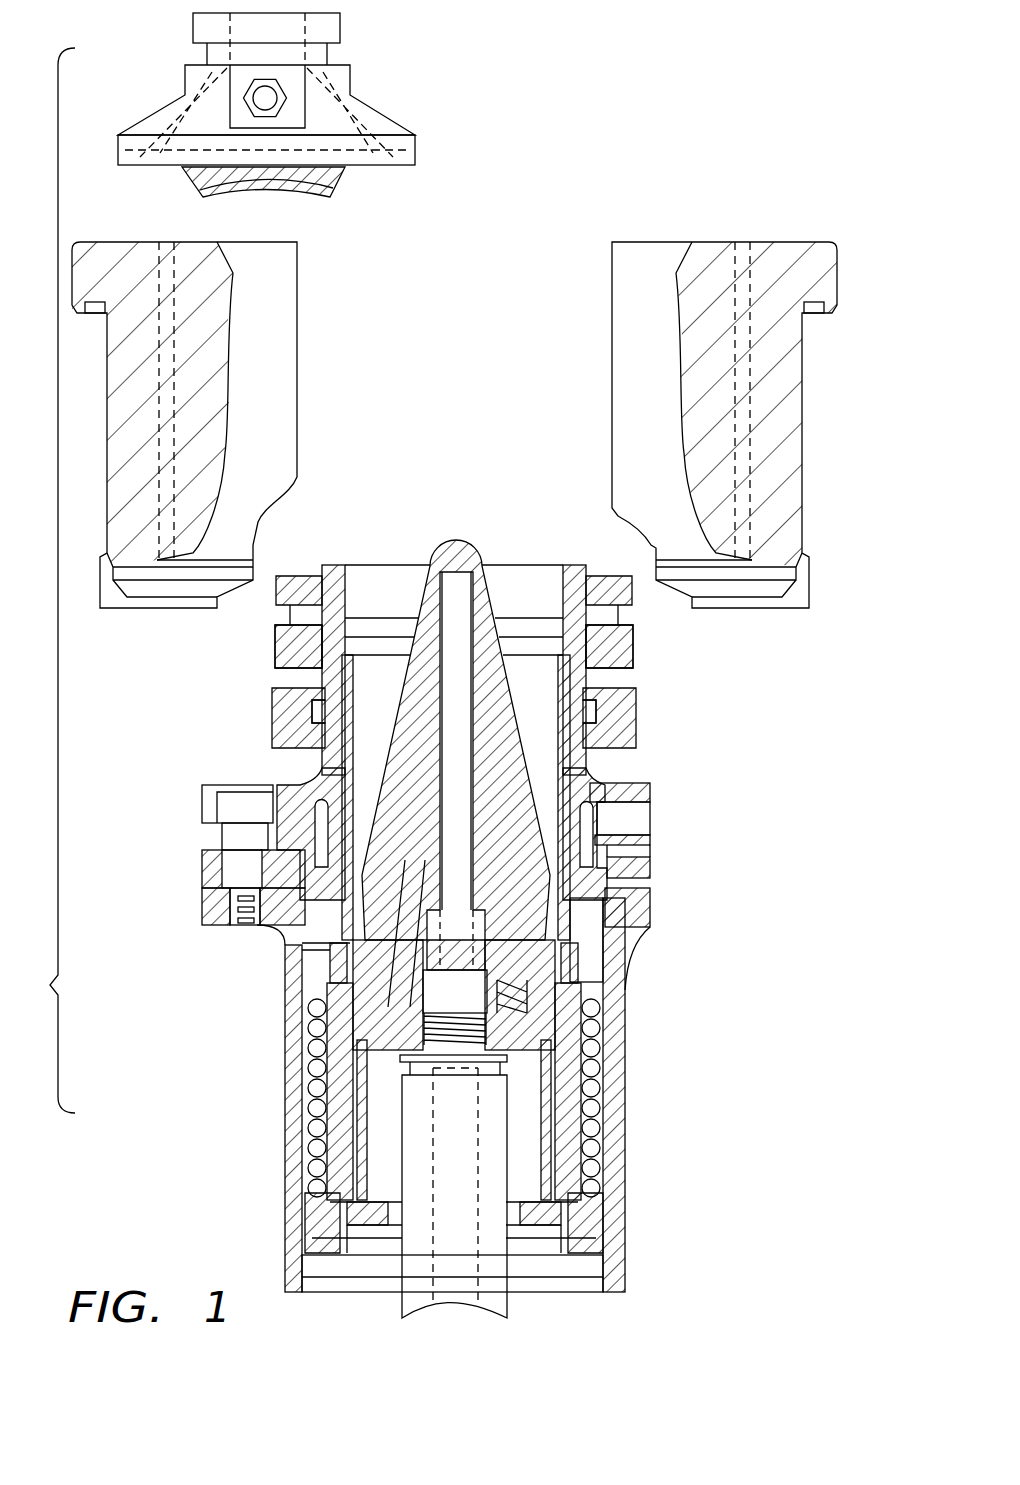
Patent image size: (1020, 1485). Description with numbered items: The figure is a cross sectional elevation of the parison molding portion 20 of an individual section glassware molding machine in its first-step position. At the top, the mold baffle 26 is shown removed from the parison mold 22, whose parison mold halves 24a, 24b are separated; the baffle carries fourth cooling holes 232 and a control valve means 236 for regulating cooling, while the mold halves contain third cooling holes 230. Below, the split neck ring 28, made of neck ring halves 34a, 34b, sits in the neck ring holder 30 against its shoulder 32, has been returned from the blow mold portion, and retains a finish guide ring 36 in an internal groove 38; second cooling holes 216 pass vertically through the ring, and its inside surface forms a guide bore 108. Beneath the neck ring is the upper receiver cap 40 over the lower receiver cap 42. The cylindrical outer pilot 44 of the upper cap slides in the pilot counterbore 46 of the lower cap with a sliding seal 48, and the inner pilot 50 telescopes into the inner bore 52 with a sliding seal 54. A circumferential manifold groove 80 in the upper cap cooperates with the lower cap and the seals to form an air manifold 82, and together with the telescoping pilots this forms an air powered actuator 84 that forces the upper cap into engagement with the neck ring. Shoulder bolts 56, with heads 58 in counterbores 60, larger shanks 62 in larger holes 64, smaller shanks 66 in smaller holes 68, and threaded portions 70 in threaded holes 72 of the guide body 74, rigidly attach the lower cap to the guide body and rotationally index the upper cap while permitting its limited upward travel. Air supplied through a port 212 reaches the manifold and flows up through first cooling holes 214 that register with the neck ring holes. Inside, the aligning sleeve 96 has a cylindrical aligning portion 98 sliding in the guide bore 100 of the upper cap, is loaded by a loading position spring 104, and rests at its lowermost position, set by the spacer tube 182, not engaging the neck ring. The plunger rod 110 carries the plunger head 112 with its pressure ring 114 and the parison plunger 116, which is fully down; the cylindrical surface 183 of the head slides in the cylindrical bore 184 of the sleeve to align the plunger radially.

The parison molding portion 20 is at (579, 158).
The parison mold 22 is at (713, 188).
The parison mold half 24a is at (298, 345).
The parison mold half 24b is at (612, 345).
The mold baffle 26 is at (420, 155).
The split neck ring 28 is at (290, 640).
The neck ring holder 30 is at (275, 705).
The shoulder 32 is at (312, 730).
The neck ring half 34a is at (275, 664).
The neck ring half 34b is at (638, 627).
The finish guide ring 36 is at (632, 636).
The internal groove 38 is at (600, 663).
The upper receiver cap 40 is at (203, 810).
The lower receiver cap 42 is at (225, 860).
The outer pilot 44 is at (618, 885).
The pilot counterbore 46 is at (625, 895).
The sliding seal 48 is at (620, 868).
The inner pilot 50 is at (630, 915).
The inner bore 52 is at (630, 925).
The sliding seal 54 is at (630, 905).
The shoulder bolts 56 is at (235, 790).
The heads 58 is at (232, 815).
The counterbores 60 is at (225, 828).
The larger shanks 62 is at (215, 855).
The larger holes 64 is at (205, 842).
The smaller shanks 66 is at (205, 866).
The smaller holes 68 is at (225, 890).
The threaded portions 70 is at (240, 946).
The threaded holes 72 is at (222, 935).
The guide body 74 is at (225, 915).
The manifold groove 80 is at (610, 795).
The air manifold 82 is at (620, 818).
The air powered actuator 84 is at (803, 712).
The aligning sleeve 96 is at (335, 990).
The aligning portion 98 is at (335, 968).
The guide bore 100 is at (625, 858).
The loading position spring 104 is at (322, 1105).
The guide bore 108 is at (358, 702).
The plunger rod 110 is at (560, 1125).
The plunger head 112 is at (603, 1103).
The pressure ring 114 is at (605, 1020).
The parison plunger 116 is at (460, 548).
The spacer tube 182 is at (595, 1135).
The cylindrical surface 183 is at (335, 950).
The cylindrical bore 184 is at (335, 1060).
The port 212 is at (625, 840).
The first cooling holes 214 is at (600, 790).
The second cooling holes 216 is at (620, 684).
The third cooling holes 230 is at (737, 387).
The fourth cooling holes 232 is at (350, 122).
The control valve means 236 is at (288, 95).